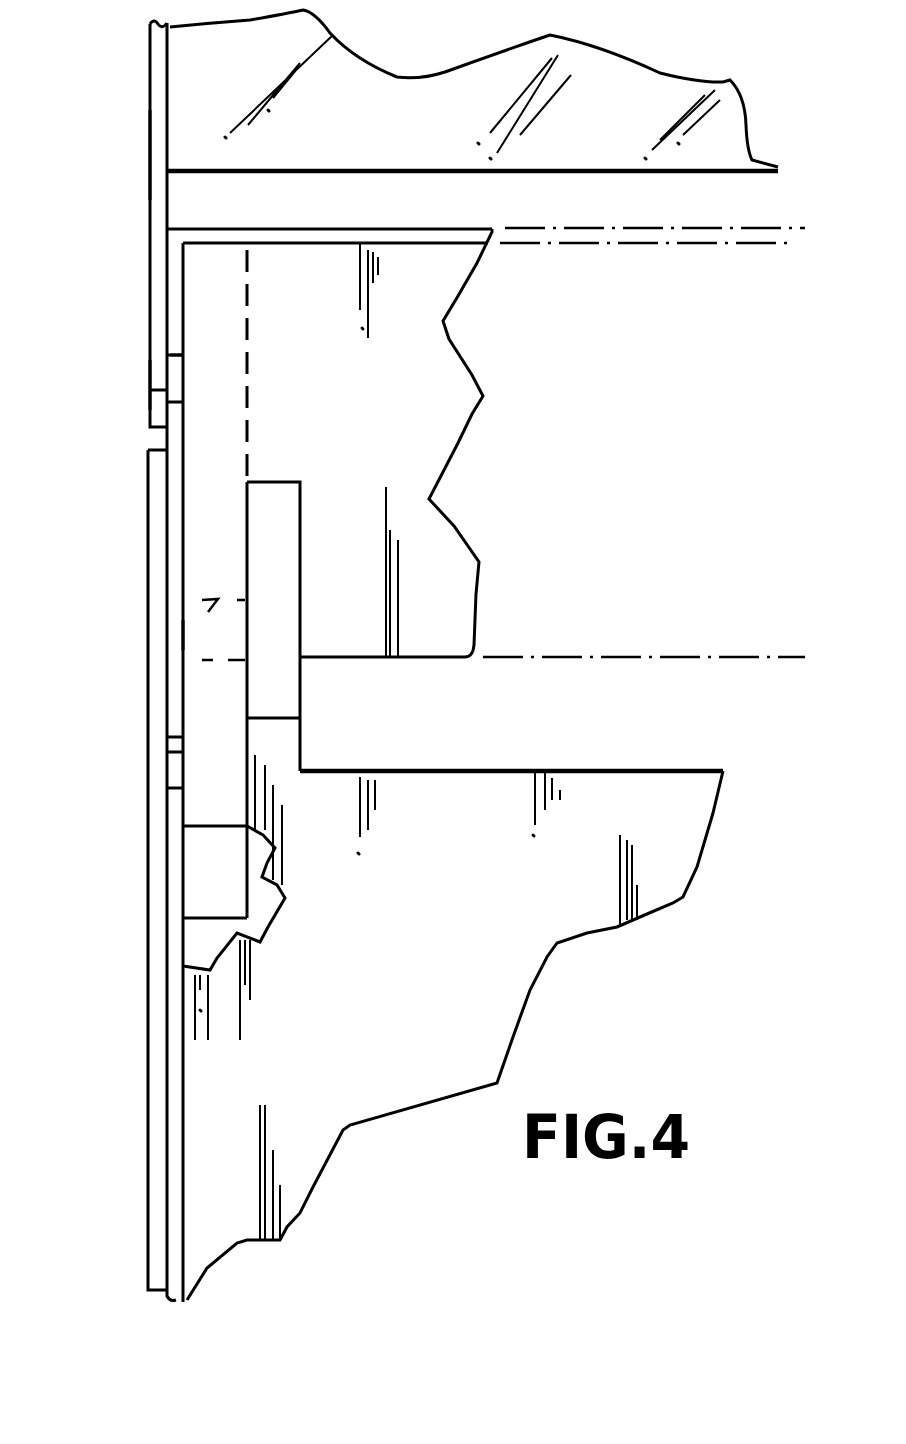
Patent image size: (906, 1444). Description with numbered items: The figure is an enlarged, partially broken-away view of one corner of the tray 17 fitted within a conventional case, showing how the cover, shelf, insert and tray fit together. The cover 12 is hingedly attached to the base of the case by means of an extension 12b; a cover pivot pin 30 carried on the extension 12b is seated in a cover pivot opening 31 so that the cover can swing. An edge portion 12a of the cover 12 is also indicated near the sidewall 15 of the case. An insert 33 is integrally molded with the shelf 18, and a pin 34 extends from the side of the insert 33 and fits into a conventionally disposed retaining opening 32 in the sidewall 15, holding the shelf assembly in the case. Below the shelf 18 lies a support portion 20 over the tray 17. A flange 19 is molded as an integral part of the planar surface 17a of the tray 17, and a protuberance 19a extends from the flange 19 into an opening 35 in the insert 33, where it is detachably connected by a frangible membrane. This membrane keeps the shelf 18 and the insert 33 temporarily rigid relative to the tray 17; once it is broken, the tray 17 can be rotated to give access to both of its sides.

The cover 12 is at (425, 140).
The panel edge 12a is at (147, 157).
The extension 12b is at (150, 384).
The sidewall 15 is at (152, 1100).
The tray 17 is at (530, 1000).
The planar surface 17a is at (400, 1032).
The shelf 18 is at (447, 423).
The flange 19 is at (293, 575).
The protuberance 19a is at (192, 635).
The support member 20 is at (608, 732).
The cover pivot pin 30 is at (177, 373).
The cover pivot opening 31 is at (170, 357).
The retaining opening 32 is at (176, 790).
The insert 33 is at (228, 422).
The pin 34 is at (178, 752).
The opening 35 is at (197, 608).